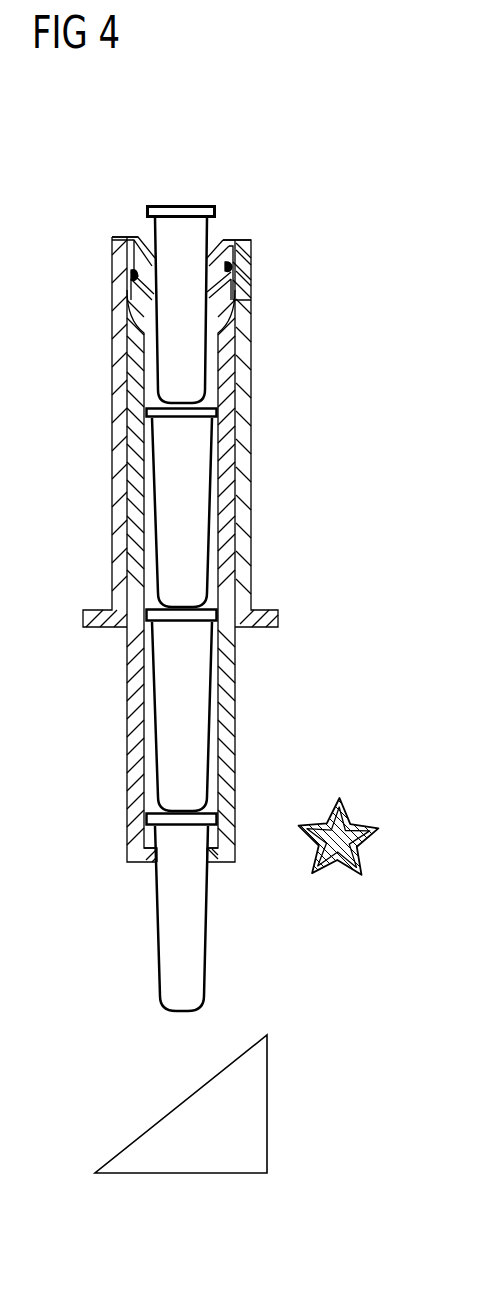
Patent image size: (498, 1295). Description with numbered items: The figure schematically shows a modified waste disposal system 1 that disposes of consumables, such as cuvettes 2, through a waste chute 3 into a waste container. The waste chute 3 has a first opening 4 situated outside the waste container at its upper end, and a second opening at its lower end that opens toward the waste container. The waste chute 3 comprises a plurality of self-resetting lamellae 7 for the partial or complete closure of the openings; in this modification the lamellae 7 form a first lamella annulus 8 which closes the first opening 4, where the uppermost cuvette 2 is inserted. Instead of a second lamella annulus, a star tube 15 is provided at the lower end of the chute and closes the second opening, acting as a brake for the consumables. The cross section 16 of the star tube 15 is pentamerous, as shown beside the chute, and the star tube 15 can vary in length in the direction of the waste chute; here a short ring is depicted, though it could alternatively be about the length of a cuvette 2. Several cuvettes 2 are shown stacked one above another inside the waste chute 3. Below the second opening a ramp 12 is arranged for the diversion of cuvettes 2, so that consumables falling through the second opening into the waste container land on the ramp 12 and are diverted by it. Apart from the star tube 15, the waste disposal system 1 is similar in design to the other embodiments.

The waste disposal system 1 is at (115, 170).
The cuvette 2 is at (193, 353).
The waste chute 3 is at (135, 380).
The first opening 4 is at (224, 220).
The lamella 7 is at (130, 275).
The first lamella annulus 8 is at (248, 242).
The ramp 12 is at (268, 1113).
The star tube 15 is at (208, 864).
The cross section 16 is at (330, 878).